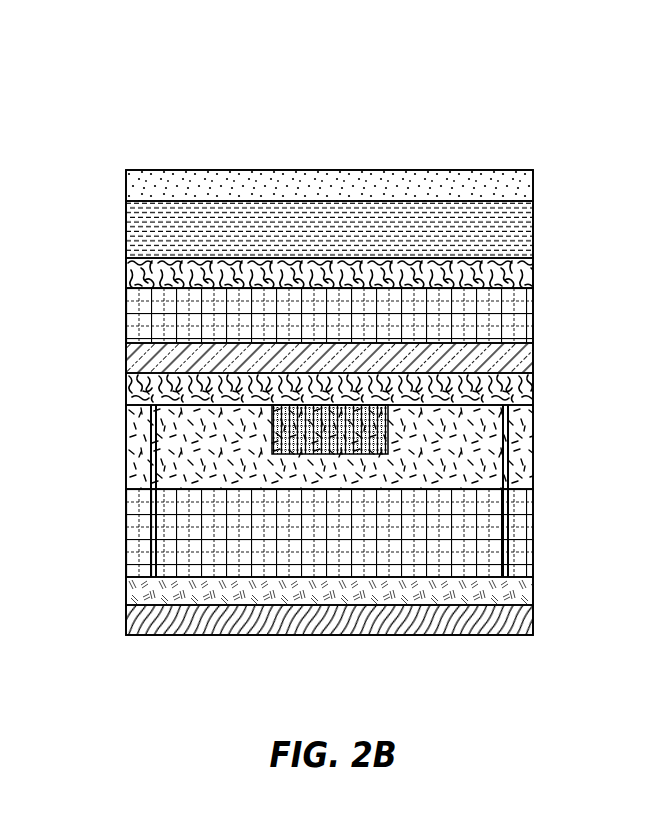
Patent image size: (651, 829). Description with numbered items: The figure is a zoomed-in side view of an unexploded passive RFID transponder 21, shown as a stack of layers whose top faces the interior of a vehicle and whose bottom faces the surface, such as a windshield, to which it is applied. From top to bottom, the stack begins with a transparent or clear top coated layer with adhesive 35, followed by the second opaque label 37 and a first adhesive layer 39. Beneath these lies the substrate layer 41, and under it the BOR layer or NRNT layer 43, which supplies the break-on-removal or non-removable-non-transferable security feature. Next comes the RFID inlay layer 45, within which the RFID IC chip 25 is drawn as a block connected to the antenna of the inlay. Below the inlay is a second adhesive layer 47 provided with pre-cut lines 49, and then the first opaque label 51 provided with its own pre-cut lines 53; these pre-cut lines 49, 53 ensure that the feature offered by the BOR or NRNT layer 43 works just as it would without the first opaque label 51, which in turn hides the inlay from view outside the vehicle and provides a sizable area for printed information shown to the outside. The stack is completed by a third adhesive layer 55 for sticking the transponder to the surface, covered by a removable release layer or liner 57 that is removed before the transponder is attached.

The passive RFID transponder 21 is at (209, 113).
The RFID IC chip 25 is at (302, 428).
The top coated layer with adhesive 35 is at (512, 186).
The second opaque label 37 is at (492, 228).
The first adhesive layer 39 is at (527, 274).
The substrate layer 41 is at (492, 318).
The BOR layer or NRNT layer 43 is at (492, 357).
The RFID inlay layer 45 is at (528, 386).
The second adhesive layer 47 is at (452, 425).
The pre-cut lines 49 is at (150, 433).
The first opaque label 51 is at (450, 507).
The pre-cut lines 53 is at (152, 520).
The third adhesive layer 55 is at (490, 590).
The removable release layer or liner 57 is at (520, 625).